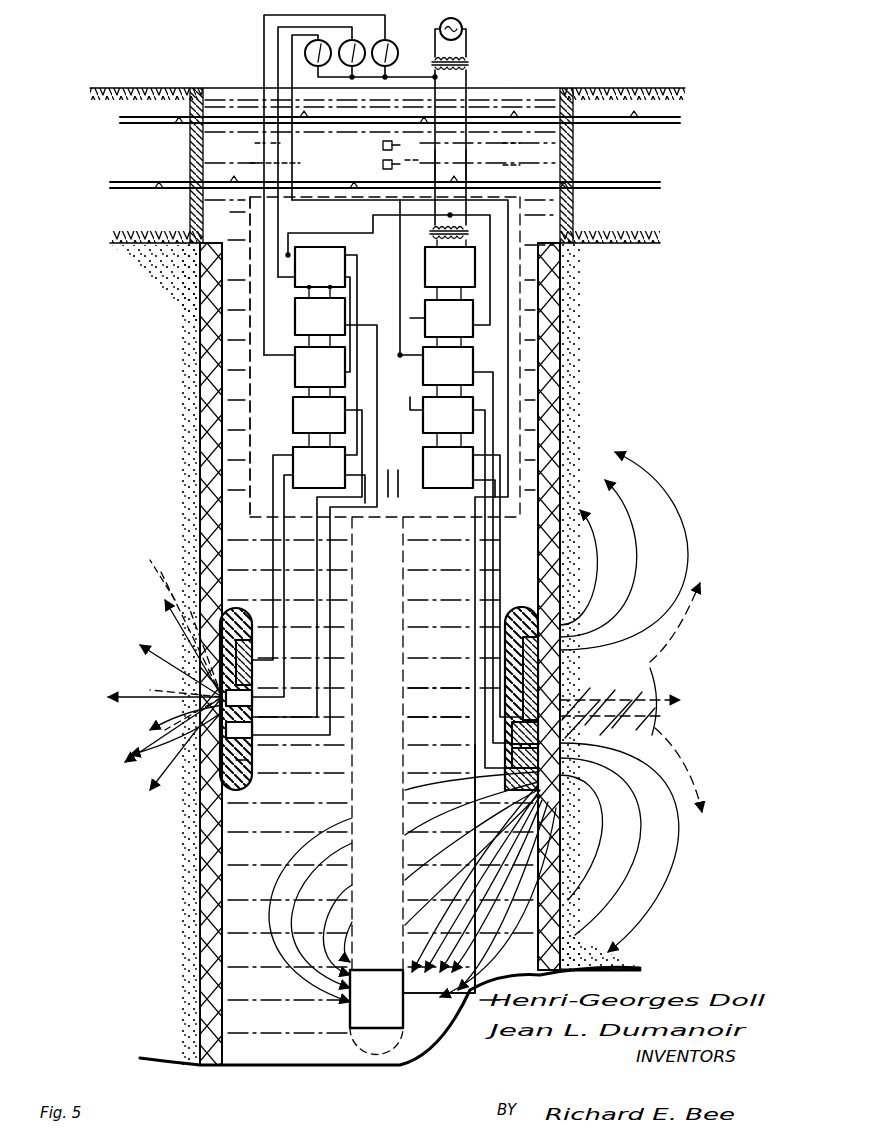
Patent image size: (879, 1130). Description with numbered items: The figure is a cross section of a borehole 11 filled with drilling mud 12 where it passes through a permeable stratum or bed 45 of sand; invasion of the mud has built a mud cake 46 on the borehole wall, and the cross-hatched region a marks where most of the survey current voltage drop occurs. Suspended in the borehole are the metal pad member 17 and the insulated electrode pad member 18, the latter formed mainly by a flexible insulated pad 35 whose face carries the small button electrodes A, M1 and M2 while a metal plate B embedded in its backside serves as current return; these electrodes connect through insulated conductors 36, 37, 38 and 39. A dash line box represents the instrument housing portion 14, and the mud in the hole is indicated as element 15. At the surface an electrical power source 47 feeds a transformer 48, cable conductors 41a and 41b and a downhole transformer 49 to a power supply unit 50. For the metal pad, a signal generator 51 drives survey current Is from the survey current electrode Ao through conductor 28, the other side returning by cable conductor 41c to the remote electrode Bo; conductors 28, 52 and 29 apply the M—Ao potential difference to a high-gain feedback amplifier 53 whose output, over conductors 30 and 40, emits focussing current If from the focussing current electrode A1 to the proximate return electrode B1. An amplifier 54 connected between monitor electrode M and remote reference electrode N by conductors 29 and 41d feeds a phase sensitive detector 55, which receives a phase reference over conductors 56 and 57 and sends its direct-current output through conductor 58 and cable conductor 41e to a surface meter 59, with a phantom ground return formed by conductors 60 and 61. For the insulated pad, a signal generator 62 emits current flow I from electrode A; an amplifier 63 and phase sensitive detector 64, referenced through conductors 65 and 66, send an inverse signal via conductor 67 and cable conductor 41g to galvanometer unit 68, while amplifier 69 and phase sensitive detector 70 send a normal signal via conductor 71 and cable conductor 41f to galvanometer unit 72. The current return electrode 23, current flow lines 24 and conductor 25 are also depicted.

The borehole 11 is at (555, 130).
The drilling mud 12 is at (248, 179).
The instrument housing portion 14 is at (418, 517).
The drilling mud 15 is at (410, 712).
The metal pad member 17 is at (410, 680).
The insulated electrode pad member 18 is at (255, 782).
The current electrode 23 is at (545, 762).
The current flow lines 24 is at (488, 880).
The conductor 25 is at (475, 750).
The insulated conductor 28 is at (485, 540).
The conductor 29 is at (388, 500).
The conductor 30 is at (493, 592).
The insulated pad 35 is at (222, 770).
The insulated conductor 36 is at (258, 688).
The insulated conductor 37 is at (287, 712).
The insulated conductor 38 is at (358, 327).
The insulated conductor 39 is at (273, 538).
The conductor 40 is at (500, 608).
The cable conductor 41a is at (450, 165).
The cable conductor 41b is at (482, 165).
The cable conductor 41c is at (505, 152).
The cable conductor 41d is at (420, 172).
The insulated cable conductor 41e is at (288, 163).
The cable conductor 41f is at (282, 143).
The cable conductor 41g is at (258, 143).
The permeable stratum or bed 45 is at (610, 298).
The mud cake 46 is at (560, 390).
The electrical power source 47 is at (463, 22).
The transformer 48 is at (470, 64).
The downhole transformer 49 is at (430, 235).
The downhole power supply unit 50 is at (425, 275).
The signal generator 51 is at (475, 466).
The conductor 52 is at (398, 500).
The high-gain feedback amplifier 53 is at (468, 397).
The amplifier 54 is at (473, 360).
The phase sensitive detector 55 is at (425, 310).
The conductor 56 is at (400, 360).
The conductor 57 is at (410, 404).
The conductor 58 is at (490, 295).
The indicating device or meter 59 is at (318, 66).
The conductor 60 is at (405, 74).
The conductor 61 is at (322, 233).
The signal generator 62 is at (300, 447).
The amplifier 63 is at (293, 410).
The phase sensitive detector 64 is at (292, 362).
The conductor 65 is at (358, 272).
The conductor 66 is at (352, 292).
The conductor 67 is at (264, 330).
The indicating device or galvanometer unit 68 is at (398, 40).
The amplifier 69 is at (295, 322).
The phase sensitive detector 70 is at (330, 247).
The conductor 71 is at (262, 218).
The indicating device or galvanometer unit 72 is at (365, 42).
The current-emitting electrode A is at (185, 688).
The current return electrode B is at (254, 742).
The potential monitor electrode M1 is at (190, 700).
The potential monitor electrode M2 is at (200, 740).
The current flow I is at (155, 622).
The focussing current electrode A1 is at (548, 602).
The monitor electrode M is at (545, 652).
The survey current electrode Ao is at (542, 692).
The cross-hatched region a is at (652, 698).
The survey current Is is at (680, 678).
The focussing current If is at (672, 520).
The electrically-proximate current-return electrode B1 is at (350, 1034).
The electrically-remote current-return electrode Bo is at (383, 145).
The electrically-remote potential reference electrode N is at (383, 164).